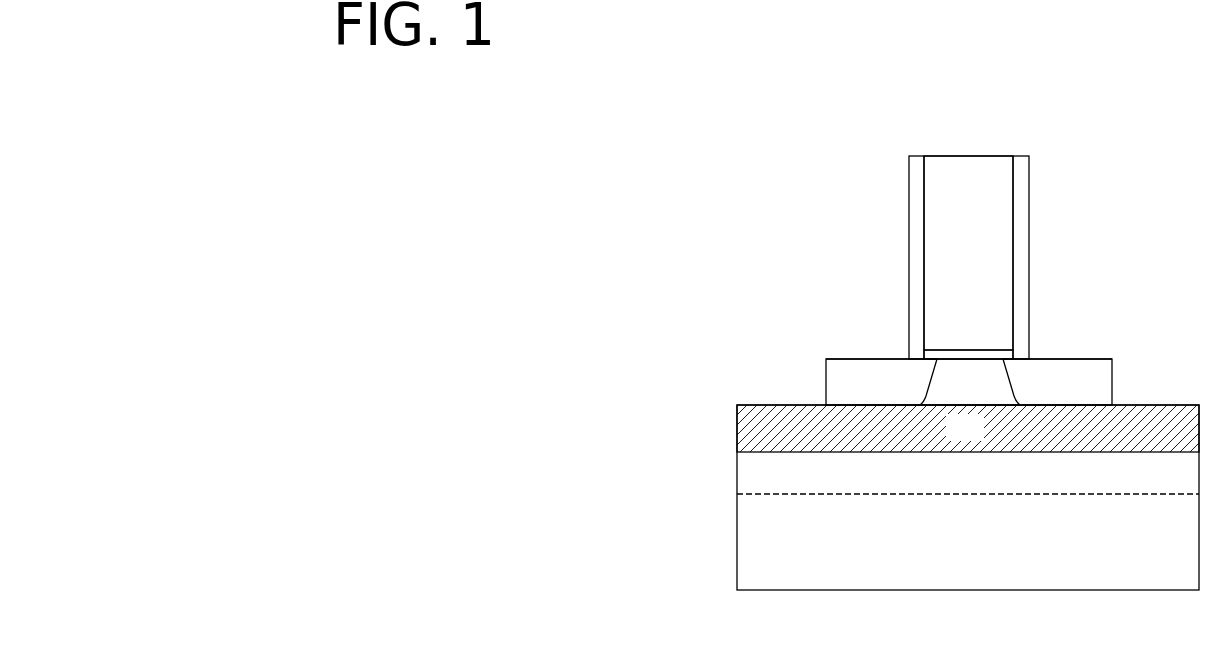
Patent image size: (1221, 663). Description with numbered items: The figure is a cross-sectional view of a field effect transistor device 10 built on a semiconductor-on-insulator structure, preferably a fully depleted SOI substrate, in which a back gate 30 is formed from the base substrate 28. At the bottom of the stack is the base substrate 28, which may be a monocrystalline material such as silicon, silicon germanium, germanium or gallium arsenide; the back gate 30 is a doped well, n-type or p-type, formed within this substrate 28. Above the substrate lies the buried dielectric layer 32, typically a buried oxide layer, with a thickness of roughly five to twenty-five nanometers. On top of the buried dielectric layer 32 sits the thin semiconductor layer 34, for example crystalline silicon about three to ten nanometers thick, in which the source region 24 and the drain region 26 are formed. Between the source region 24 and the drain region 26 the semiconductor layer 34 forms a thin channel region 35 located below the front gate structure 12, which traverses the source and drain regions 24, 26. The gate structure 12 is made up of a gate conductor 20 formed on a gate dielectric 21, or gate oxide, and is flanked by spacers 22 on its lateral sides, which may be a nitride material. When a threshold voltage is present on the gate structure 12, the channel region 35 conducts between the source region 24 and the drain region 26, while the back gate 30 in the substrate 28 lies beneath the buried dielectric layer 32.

The field effect transistor device 10 is at (662, 108).
The front gate structure 12 is at (900, 117).
The gate conductor 20 is at (985, 276).
The gate dielectric 21 is at (992, 353).
The spacers 22 is at (1023, 219).
The source region 24 is at (861, 393).
The drain region 26 is at (1096, 393).
The base substrate 28 is at (765, 510).
The back gate 30 is at (979, 486).
The buried dielectric layer 32 is at (979, 438).
The semiconductor layer 34 is at (826, 377).
The channel region 35 is at (977, 393).